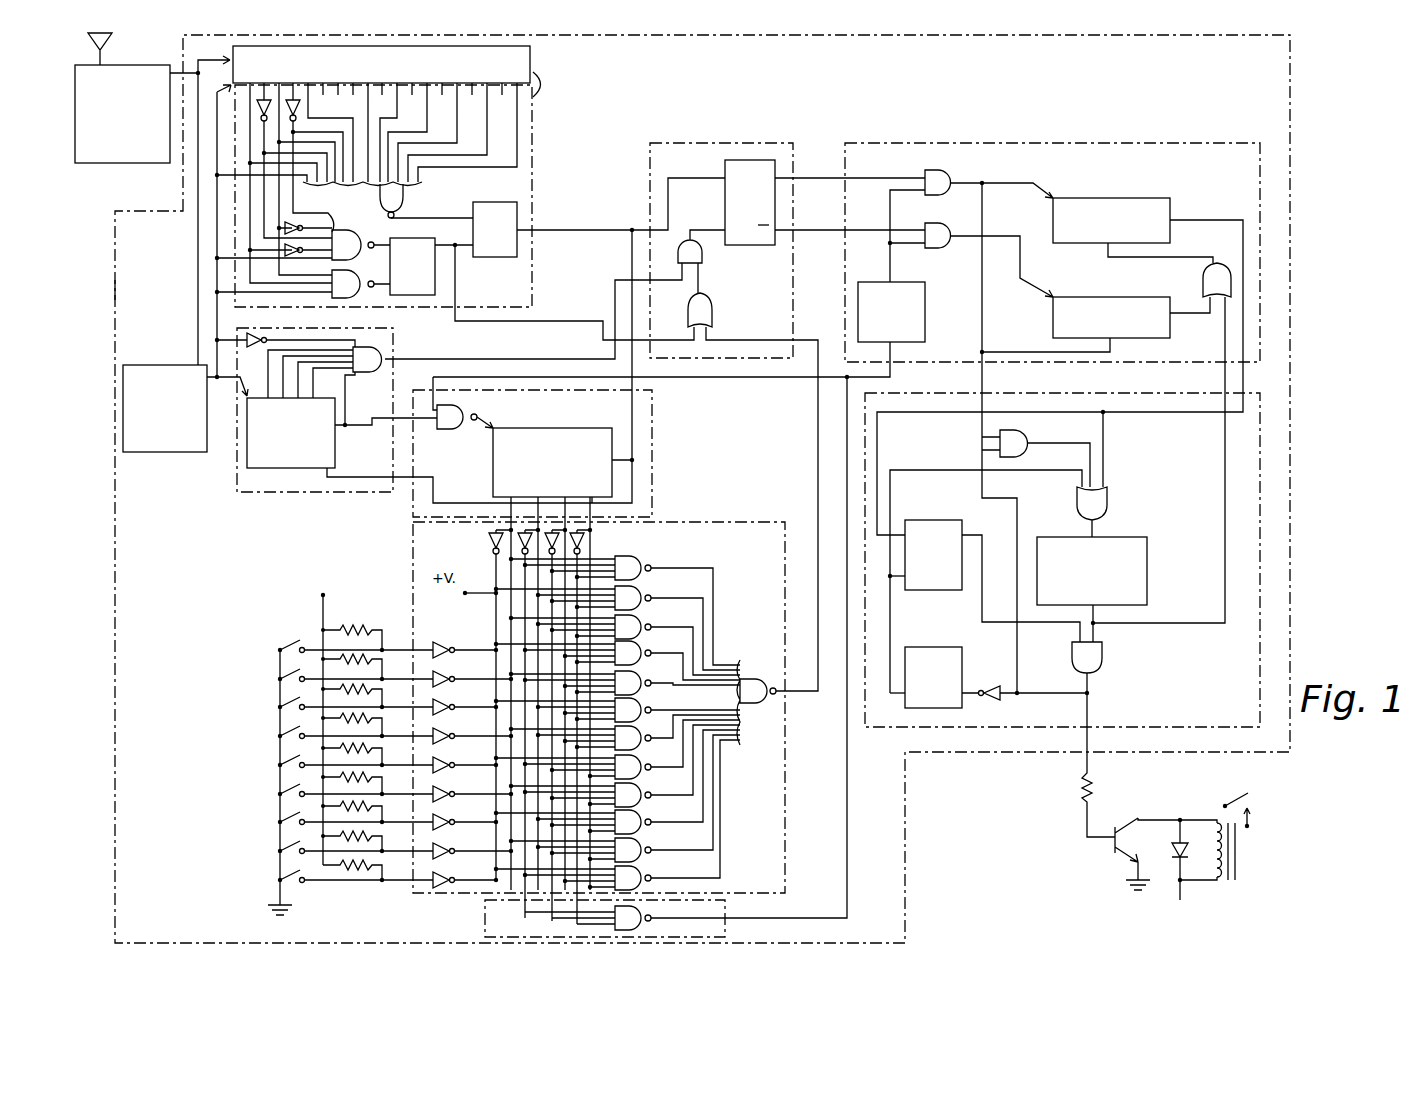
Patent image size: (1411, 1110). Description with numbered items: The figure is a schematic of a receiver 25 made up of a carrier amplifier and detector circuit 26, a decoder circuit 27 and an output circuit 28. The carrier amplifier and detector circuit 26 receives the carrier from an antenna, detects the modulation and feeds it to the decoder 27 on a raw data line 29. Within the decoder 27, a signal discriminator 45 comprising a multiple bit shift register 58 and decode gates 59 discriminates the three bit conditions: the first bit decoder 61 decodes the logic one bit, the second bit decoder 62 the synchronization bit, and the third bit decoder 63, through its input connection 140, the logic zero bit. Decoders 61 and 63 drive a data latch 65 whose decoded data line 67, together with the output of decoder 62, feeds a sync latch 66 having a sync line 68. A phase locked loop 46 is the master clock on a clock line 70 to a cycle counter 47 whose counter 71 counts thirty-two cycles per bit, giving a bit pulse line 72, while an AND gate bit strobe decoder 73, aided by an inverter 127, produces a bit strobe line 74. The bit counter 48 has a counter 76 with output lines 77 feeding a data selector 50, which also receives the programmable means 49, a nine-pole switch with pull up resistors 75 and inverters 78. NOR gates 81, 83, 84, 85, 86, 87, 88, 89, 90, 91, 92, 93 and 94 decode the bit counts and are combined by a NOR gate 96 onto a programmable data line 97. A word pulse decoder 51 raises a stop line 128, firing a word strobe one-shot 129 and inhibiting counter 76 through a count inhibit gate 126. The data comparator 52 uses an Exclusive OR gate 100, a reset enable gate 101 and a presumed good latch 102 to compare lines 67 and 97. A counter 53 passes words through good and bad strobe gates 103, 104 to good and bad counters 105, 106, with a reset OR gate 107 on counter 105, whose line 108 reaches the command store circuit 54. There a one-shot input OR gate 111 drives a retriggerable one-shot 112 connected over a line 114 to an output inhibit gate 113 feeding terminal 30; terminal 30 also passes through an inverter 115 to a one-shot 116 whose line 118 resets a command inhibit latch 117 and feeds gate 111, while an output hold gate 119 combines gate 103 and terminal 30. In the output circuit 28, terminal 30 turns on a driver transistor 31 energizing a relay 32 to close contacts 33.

The receiver 25 is at (97, 241).
The carrier amplifier and detector circuit 26 is at (130, 164).
The decoder circuit 27 is at (115, 283).
The output circuit 28 is at (1120, 873).
The raw data line 29 is at (220, 58).
The terminal 30 is at (1090, 693).
The driver transistor 31 is at (1125, 825).
The relay 32 is at (1240, 866).
The contacts 33 is at (1262, 805).
The signal discriminator 45 is at (545, 84).
The phase locked loop 46 is at (140, 365).
The cycle counter 47 is at (237, 480).
The bit counter 48 is at (652, 440).
The programmable means 49 is at (280, 770).
The data selector 50 is at (413, 895).
The word pulse decoder 51 is at (485, 922).
The data comparator 52 is at (678, 143).
The counter 53 is at (920, 143).
The command store circuit 54 is at (1262, 455).
The multiple bit shift register 58 is at (537, 63).
The decode gates 59 is at (535, 157).
The first bit decoder 61 is at (303, 245).
The second bit decoder 62 is at (405, 195).
The third bit decoder 63 is at (303, 284).
The data latch 65 is at (412, 266).
The sync latch 66 is at (495, 229).
The decoded data line 67 is at (455, 295).
The sync line 68 is at (572, 230).
The clock line 70 is at (217, 372).
The counter 71 is at (285, 468).
The bit pulse line 72 is at (372, 430).
The bit strobe decoder 73 is at (385, 352).
The bit strobe line 74 is at (435, 358).
The pull up resistor 75 is at (356, 619).
The counter 76 is at (605, 428).
The output lines 77 is at (625, 498).
The inverter 78 is at (467, 631).
The NOR gate 81 is at (624, 610).
The NOR gate 83 is at (617, 628).
The NOR gate 84 is at (624, 645).
The NOR gate 85 is at (617, 660).
The NOR gate 86 is at (624, 683).
The NOR gate 87 is at (617, 710).
The NOR gate 88 is at (624, 732).
The NOR gate 89 is at (617, 749).
The NOR gate 90 is at (624, 766).
The NOR gate 91 is at (617, 782).
The NOR gate 92 is at (624, 798).
The NOR gate 93 is at (617, 815).
The NOR gate 94 is at (588, 918).
The NOR gate 96 is at (756, 702).
The programmable data line 97 is at (818, 494).
The Exclusive OR gate 100 is at (713, 310).
The reset enable gate 101 is at (705, 258).
The presumed good latch 102 is at (748, 160).
The good strobe gate 103 is at (948, 174).
The bad strobe gate 104 is at (948, 224).
The good counter 105 is at (1100, 198).
The bad counter 106 is at (1090, 297).
The reset OR gate 107 is at (1230, 268).
The line 108 is at (1243, 215).
The one-shot input OR gate 111 is at (1110, 500).
The retriggerable one-shot 112 is at (1128, 537).
The output inhibit gate 113 is at (1102, 660).
The line 114 is at (1225, 545).
The inverter 115 is at (998, 677).
The one-shot 116 is at (955, 648).
The command inhibit latch 117 is at (942, 570).
The line 118 is at (893, 510).
The output hold gate 119 is at (1028, 438).
The count inhibit gate 126 is at (465, 412).
The inverter 127 is at (250, 338).
The stop line 128 is at (847, 826).
The word strobe one-shot 129 is at (925, 312).
The input connection 140 is at (285, 252).